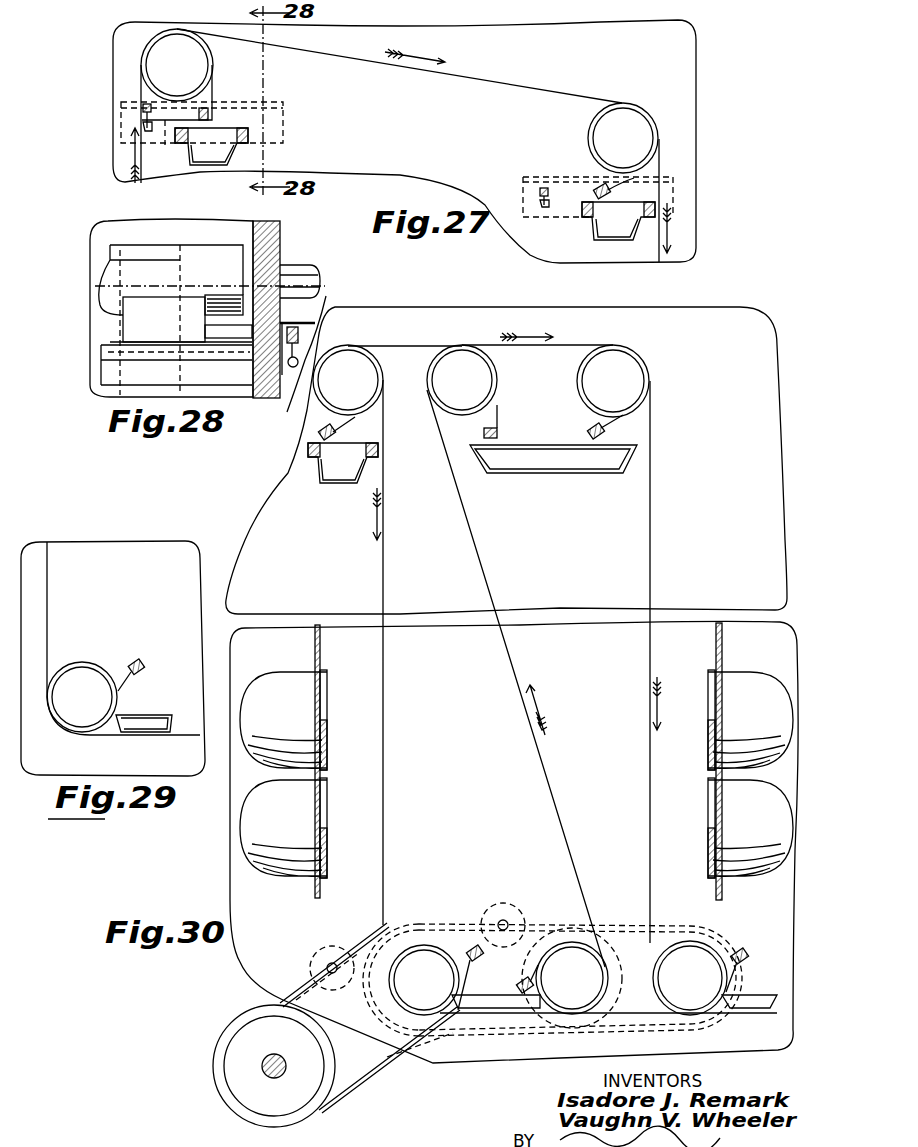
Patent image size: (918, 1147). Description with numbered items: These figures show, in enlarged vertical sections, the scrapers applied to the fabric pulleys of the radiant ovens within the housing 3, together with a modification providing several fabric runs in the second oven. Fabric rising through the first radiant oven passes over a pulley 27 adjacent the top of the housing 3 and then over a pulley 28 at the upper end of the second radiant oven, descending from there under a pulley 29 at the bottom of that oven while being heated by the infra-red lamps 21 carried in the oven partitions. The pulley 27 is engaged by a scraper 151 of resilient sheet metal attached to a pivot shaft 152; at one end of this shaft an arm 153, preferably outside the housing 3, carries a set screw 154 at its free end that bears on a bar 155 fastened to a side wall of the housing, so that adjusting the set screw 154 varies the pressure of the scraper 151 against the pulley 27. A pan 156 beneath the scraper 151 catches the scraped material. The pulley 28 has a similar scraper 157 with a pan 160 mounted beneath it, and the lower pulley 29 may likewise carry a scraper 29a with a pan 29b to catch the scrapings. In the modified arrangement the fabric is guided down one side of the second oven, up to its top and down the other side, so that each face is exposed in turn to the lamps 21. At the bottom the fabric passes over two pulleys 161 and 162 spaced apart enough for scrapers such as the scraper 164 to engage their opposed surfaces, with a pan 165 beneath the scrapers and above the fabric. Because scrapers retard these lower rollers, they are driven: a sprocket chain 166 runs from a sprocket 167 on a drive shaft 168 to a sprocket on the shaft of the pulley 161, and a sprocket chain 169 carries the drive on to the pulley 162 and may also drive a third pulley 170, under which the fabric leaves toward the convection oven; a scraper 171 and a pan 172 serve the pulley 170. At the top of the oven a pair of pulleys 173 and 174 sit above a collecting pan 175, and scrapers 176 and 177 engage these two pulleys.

In FIG. 27, the pulley 27 is at (143, 54).
In FIG. 28, the pulley 27 is at (195, 248).
In FIG. 27, the pulley 28 is at (587, 130).
In FIG. 30, the pulley 28 is at (377, 363).
In FIG. 28, the housing 3 is at (281, 248).
In FIG. 27, the scraper 151 is at (208, 88).
In FIG. 28, the scraper 151 is at (127, 318).
In FIG. 27, the pivot shaft 152 is at (209, 112).
In FIG. 28, the pivot shaft 152 is at (217, 330).
In FIG. 27, the arm 153 is at (165, 145).
In FIG. 28, the arm 153 is at (318, 321).
In FIG. 27, the set screw 154 is at (142, 117).
In FIG. 28, the set screw 154 is at (297, 395).
In FIG. 27, the bar 155 is at (280, 102).
In FIG. 28, the bar 155 is at (303, 297).
In FIG. 27, the pan 156 is at (234, 150).
In FIG. 28, the pan 156 is at (110, 385).
In FIG. 27, the scraper 157 is at (610, 187).
In FIG. 30, the scraper 157 is at (358, 425).
In FIG. 27, the pan 160 is at (592, 235).
In FIG. 30, the pan 160 is at (316, 483).
In FIG. 30, the pulley 173 is at (498, 372).
In FIG. 30, the pulley 174 is at (588, 410).
In FIG. 30, the collecting pan 175 is at (547, 472).
In FIG. 30, the scraper 176 is at (500, 418).
In FIG. 30, the scraper 177 is at (612, 430).
In FIG. 30, the infra-red lamps 21 is at (268, 677).
In FIG. 30, the pulley 161 is at (423, 945).
In FIG. 30, the pulley 162 is at (570, 942).
In FIG. 30, the scraper 164 is at (473, 945).
In FIG. 30, the pan 165 is at (488, 1013).
In FIG. 30, the sprocket chain 166 is at (372, 1077).
In FIG. 30, the sprocket 167 is at (223, 1043).
In FIG. 30, the drive shaft 168 is at (273, 1054).
In FIG. 30, the sprocket chain 169 is at (617, 925).
In FIG. 30, the third pulley 170 is at (687, 941).
In FIG. 30, the scraper 171 is at (747, 963).
In FIG. 30, the pan 172 is at (753, 1013).
In FIG. 29, the pulley 29 is at (78, 662).
In FIG. 29, the scraper 29a is at (137, 682).
In FIG. 29, the pan 29b is at (153, 714).